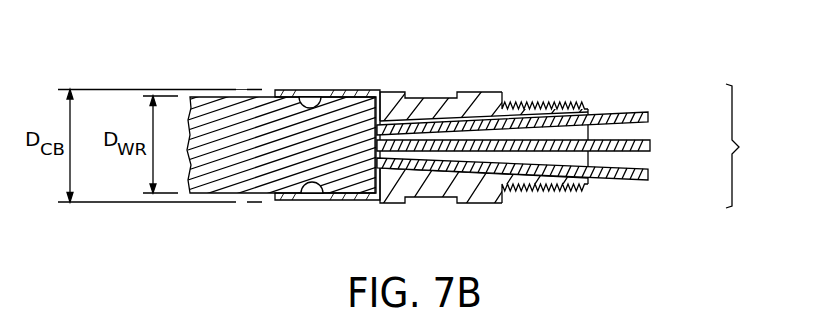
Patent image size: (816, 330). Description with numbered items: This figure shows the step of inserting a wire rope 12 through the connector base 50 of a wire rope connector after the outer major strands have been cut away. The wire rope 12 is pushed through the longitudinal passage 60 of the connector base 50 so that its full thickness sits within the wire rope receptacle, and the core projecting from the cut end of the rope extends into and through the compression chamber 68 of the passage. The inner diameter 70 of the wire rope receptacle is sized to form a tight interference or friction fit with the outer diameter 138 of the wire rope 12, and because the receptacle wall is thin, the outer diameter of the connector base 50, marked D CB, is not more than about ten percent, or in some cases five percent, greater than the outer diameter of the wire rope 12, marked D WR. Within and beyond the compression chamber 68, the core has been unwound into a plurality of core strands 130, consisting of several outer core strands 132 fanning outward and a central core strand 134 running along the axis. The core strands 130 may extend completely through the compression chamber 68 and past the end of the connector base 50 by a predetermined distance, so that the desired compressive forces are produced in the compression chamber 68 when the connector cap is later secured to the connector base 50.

The wire rope 12 is at (253, 180).
The outer diameter of wire rope 138 is at (238, 95).
The inner diameter of wire rope receptacle 70 is at (295, 93).
The longitudinal passage 60 is at (302, 200).
The connector base 50 is at (475, 92).
The compression chamber 68 is at (586, 130).
The outer core strands 132 is at (612, 110).
The central core strand 134 is at (620, 140).
The core strands 130 is at (755, 146).